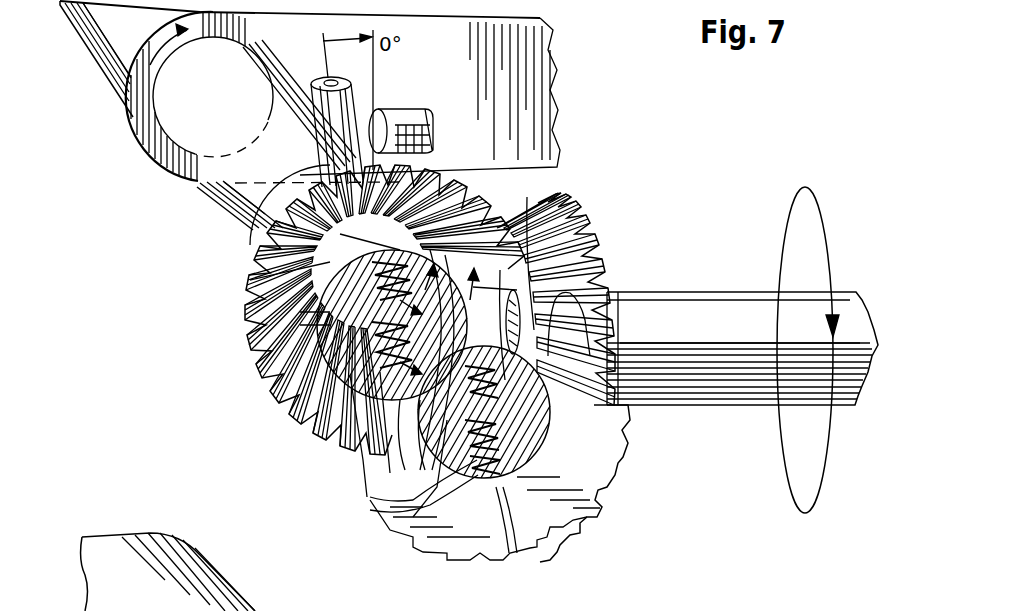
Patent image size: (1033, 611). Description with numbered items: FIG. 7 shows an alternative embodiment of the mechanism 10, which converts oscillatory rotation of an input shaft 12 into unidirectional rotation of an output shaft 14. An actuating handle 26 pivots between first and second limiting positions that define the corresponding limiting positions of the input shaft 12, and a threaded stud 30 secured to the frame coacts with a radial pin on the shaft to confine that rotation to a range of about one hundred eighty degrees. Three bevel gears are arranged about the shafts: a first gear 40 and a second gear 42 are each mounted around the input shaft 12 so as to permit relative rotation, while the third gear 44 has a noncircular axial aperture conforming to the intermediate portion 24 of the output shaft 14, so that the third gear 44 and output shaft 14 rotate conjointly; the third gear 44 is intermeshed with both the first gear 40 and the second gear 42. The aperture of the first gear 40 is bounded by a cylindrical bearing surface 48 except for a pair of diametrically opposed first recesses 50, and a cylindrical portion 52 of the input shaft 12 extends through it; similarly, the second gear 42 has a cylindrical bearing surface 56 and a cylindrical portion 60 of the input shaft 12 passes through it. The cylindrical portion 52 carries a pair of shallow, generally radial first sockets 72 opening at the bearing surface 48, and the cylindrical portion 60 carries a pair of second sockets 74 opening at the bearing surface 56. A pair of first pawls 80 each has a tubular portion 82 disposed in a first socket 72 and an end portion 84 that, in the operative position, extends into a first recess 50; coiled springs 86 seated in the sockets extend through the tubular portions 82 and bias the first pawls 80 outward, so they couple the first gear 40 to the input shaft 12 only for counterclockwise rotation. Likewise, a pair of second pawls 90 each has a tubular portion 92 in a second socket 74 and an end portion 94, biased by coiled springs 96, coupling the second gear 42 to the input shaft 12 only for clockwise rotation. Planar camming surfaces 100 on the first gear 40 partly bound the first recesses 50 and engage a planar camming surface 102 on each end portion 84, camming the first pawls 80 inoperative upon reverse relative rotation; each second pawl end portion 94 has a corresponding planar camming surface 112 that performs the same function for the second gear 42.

The mechanism 10 is at (649, 129).
The input shaft 12 is at (211, 197).
The output shaft 14 is at (716, 291).
The intermediate portion of the output shaft 24 is at (733, 397).
The actuating handle 26 is at (545, 108).
The threaded stud 30 is at (404, 110).
The first gear 40 is at (252, 357).
The second gear 42 is at (424, 543).
The third gear 44 is at (593, 215).
The cylindrical bearing surface 48 is at (250, 278).
The first recesses 50 is at (300, 185).
The cylindrical portion of the input shaft 52 is at (300, 394).
The cylindrical bearing surface 56 is at (355, 508).
The cylindrical portion of the input shaft 60 is at (378, 512).
The first sockets 72 is at (383, 293).
The second sockets 74 is at (497, 382).
The first pawls 80 is at (472, 214).
The tubular portion 82 is at (492, 221).
The end portion 84 is at (395, 250).
The coiled springs 86 is at (335, 325).
The second pawls 90 is at (503, 360).
The tubular portion 92 is at (408, 425).
The end portion 94 is at (520, 328).
The coiled springs 96 is at (445, 466).
The planar camming surfaces 100 is at (420, 185).
The planar camming surface 102 is at (455, 200).
The planar camming surface 112 is at (578, 270).